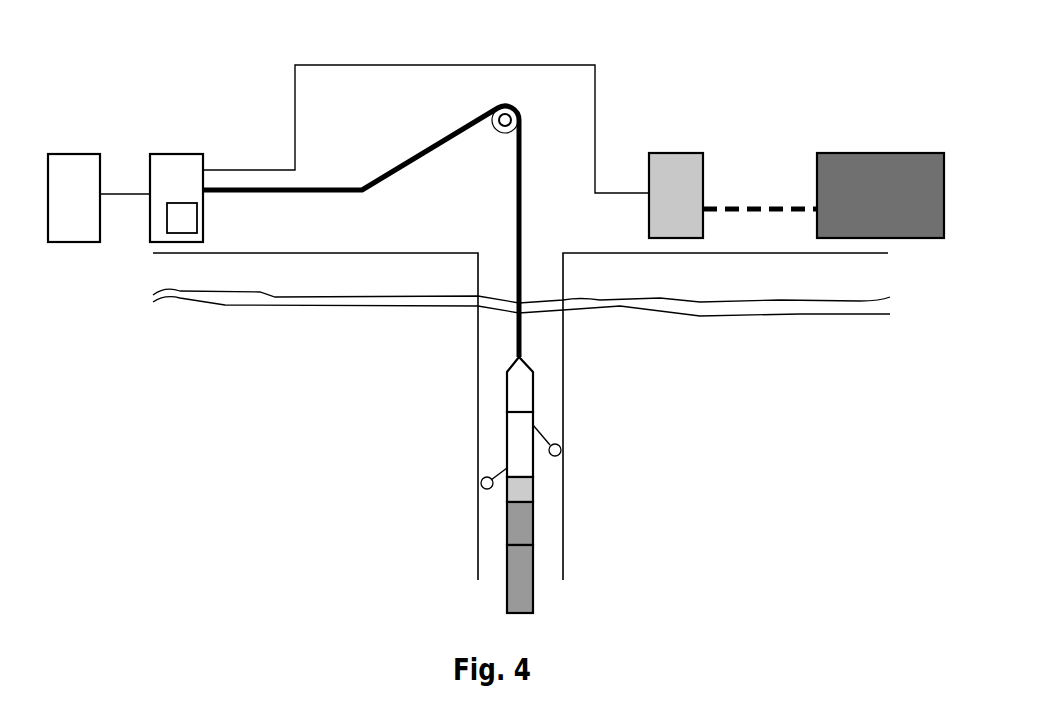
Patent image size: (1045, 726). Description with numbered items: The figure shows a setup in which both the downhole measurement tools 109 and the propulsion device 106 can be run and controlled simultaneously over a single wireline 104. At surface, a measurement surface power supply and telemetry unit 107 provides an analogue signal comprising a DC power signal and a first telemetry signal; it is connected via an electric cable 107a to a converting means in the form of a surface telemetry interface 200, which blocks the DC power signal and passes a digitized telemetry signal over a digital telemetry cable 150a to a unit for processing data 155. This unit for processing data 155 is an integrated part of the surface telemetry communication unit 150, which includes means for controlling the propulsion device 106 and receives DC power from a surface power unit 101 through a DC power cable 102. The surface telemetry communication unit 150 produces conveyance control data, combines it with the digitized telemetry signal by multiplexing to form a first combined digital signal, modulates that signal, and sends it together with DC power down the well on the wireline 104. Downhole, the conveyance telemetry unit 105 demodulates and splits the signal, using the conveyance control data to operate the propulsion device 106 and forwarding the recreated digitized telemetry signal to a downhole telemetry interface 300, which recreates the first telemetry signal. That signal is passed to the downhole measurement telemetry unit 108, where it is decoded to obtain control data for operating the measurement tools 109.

The surface power unit 101 is at (68, 152).
The DC power cable 102 is at (140, 194).
The wireline 104 is at (447, 135).
The downhole conveyance telemetry unit 105 is at (535, 400).
The propulsion device 106 is at (535, 435).
The measurement surface power supply and telemetry unit 107 is at (935, 152).
The electric cable 107a is at (755, 207).
The downhole measurement telemetry unit 108 is at (535, 518).
The downhole measurement tools 109 is at (535, 568).
The surface telemetry communication unit 150 is at (167, 152).
The digital telemetry cable 150a is at (237, 168).
The unit for processing data 155 is at (182, 222).
The surface telemetry interface 200 is at (660, 152).
The downhole telemetry interface 300 is at (535, 493).